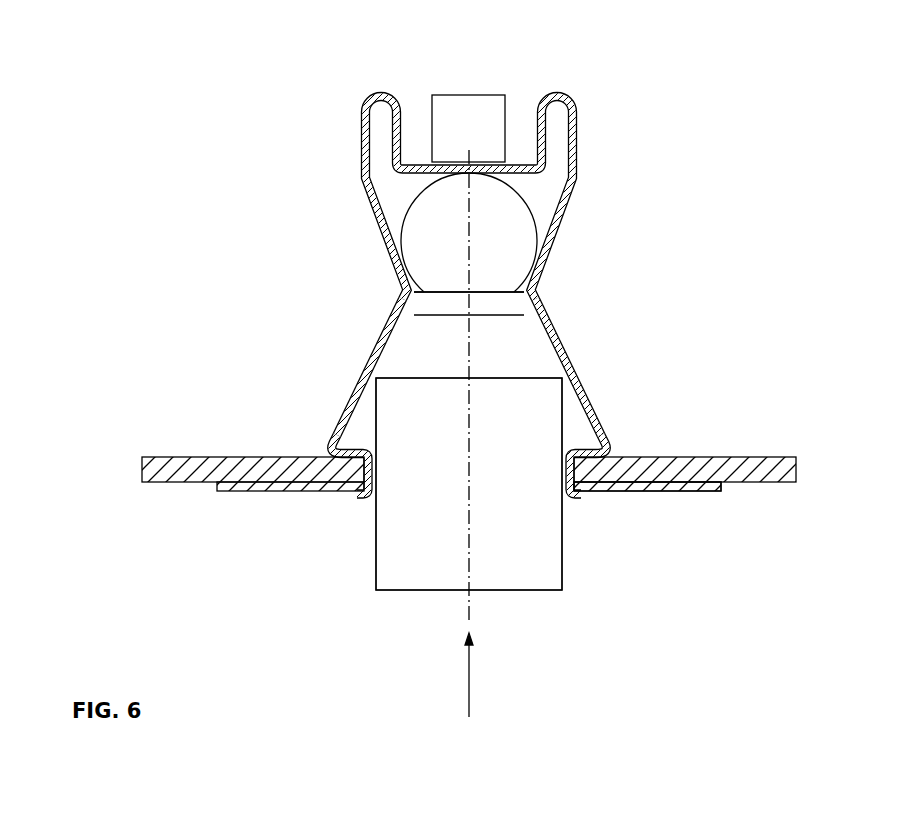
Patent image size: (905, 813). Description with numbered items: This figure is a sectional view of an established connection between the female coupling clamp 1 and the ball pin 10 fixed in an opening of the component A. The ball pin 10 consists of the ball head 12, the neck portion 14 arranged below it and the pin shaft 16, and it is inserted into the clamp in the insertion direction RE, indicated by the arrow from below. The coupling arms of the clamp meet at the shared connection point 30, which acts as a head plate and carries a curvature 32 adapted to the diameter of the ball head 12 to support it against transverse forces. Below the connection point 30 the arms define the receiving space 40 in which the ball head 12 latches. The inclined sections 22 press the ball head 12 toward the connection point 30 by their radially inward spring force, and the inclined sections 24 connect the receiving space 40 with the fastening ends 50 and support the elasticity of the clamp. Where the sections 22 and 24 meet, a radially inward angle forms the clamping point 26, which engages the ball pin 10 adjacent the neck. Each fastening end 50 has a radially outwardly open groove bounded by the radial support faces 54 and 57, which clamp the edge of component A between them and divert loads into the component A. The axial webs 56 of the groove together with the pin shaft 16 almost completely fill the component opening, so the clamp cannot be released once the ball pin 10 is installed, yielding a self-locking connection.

The female coupling clamp 1 is at (469, 363).
The ball pin 10 is at (541, 603).
The ball head 12 is at (503, 203).
The neck portion 14 is at (503, 300).
The pin shaft 16 is at (516, 480).
The inclined sections 22 is at (377, 230).
The inclined sections 24 is at (382, 335).
The clamping point 26 is at (532, 297).
The connection point 30 is at (418, 164).
The curvature 32 is at (470, 162).
The receiving space 40 is at (390, 182).
The fastening end 50 is at (688, 507).
The radial support faces 54 is at (292, 493).
The axial web 56 is at (356, 500).
The radial support face 57 is at (352, 447).
The component A is at (765, 452).
The insertion direction RE is at (470, 675).